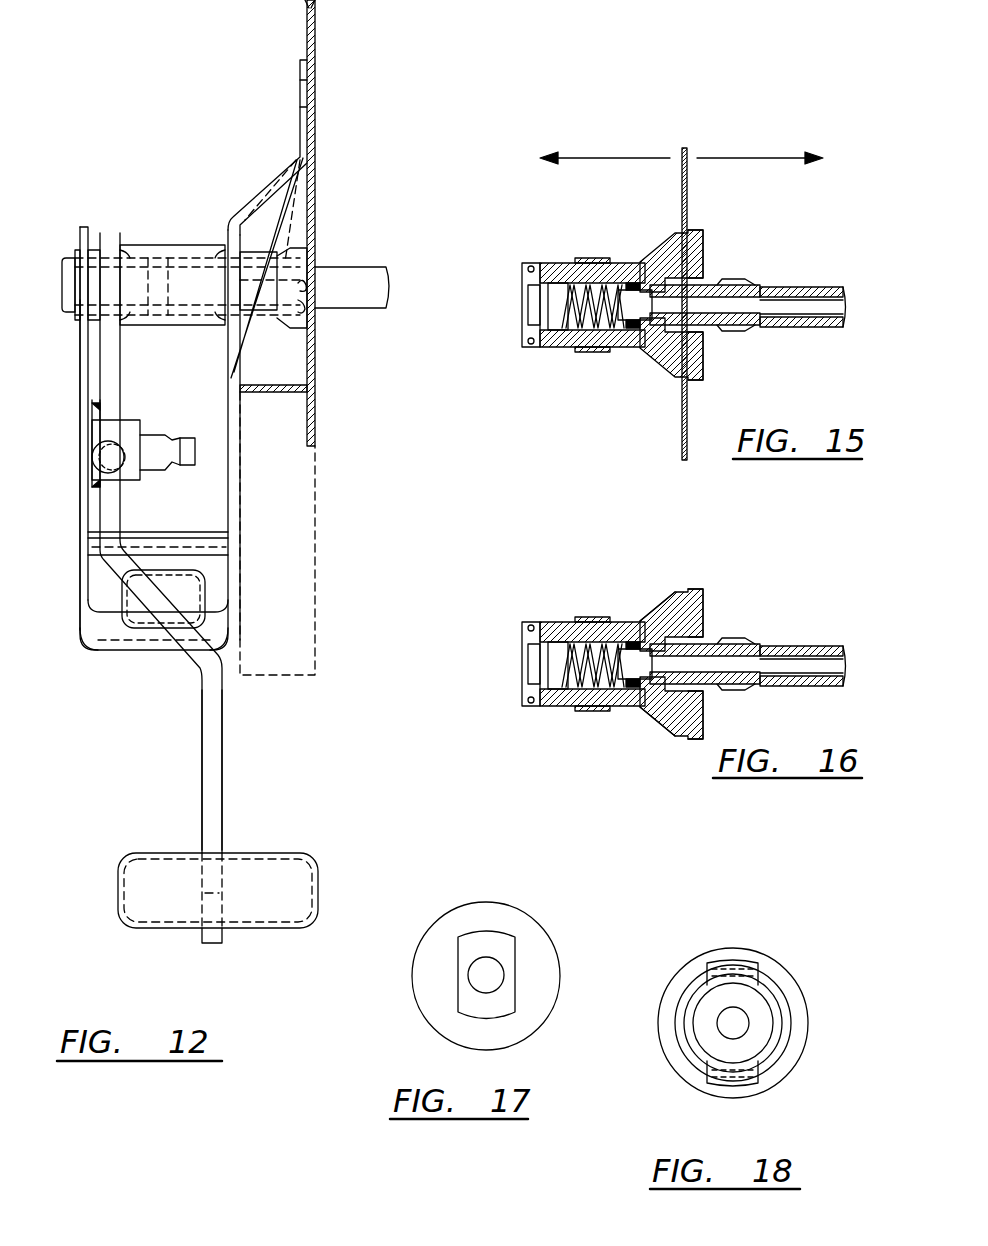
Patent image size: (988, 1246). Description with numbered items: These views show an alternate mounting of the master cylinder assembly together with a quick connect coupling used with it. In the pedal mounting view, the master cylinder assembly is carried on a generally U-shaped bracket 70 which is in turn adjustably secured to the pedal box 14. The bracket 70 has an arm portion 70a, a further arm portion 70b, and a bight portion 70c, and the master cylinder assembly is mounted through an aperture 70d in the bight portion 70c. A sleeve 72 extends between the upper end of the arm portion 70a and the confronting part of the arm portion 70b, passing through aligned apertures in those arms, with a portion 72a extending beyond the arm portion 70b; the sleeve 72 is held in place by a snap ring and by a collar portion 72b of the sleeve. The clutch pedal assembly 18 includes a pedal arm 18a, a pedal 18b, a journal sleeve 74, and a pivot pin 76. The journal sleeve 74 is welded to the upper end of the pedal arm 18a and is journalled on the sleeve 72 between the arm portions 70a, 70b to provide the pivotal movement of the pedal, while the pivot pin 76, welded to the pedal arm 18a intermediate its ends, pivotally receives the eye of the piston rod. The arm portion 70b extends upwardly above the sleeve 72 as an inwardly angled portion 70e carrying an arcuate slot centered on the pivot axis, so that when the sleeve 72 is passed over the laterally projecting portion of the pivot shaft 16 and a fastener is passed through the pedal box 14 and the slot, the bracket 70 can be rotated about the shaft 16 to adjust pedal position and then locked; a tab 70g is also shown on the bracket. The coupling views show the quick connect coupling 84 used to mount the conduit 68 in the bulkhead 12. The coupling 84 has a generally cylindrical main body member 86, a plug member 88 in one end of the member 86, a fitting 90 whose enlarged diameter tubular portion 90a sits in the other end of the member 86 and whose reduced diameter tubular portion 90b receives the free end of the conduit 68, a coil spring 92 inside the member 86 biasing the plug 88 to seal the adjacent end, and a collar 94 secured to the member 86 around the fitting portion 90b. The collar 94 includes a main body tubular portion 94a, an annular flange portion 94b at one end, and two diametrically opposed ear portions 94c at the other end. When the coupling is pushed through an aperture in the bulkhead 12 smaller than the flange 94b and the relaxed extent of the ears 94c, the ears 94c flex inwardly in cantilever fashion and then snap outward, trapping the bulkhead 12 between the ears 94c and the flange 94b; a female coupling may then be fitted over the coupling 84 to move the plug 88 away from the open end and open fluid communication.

In FIG. 15, the fire wall 12 is at (685, 150).
In FIG. 12, the pedal box 14 is at (314, 30).
In FIG. 12, the pivot shaft 16 is at (352, 272).
In FIG. 12, the clutch pedal assembly 18 is at (185, 722).
In FIG. 12, the pedal arm 18a is at (200, 768).
In FIG. 12, the pedal 18b is at (118, 885).
In FIG. 15, the conduit 68 is at (808, 286).
In FIG. 16, the conduit 68 is at (805, 635).
In FIG. 12, the bracket 70 is at (66, 415).
In FIG. 12, the arm portion 70a is at (80, 536).
In FIG. 12, the further arm portion 70b is at (241, 504).
In FIG. 12, the bight portion 70c is at (118, 652).
In FIG. 12, the aperture 70d is at (181, 582).
In FIG. 12, the inwardly angled portion 70e is at (276, 182).
In FIG. 12, the bracket tab 70g is at (112, 492).
In FIG. 12, the sleeve 72 is at (66, 258).
In FIG. 12, the sleeve portion 72a is at (303, 248).
In FIG. 12, the collar portion 72b is at (244, 336).
In FIG. 12, the journal sleeve 74 is at (200, 245).
In FIG. 12, the pivot pin 76 is at (160, 425).
In FIG. 15, the quick connect coupling 84 is at (632, 311).
In FIG. 16, the quick connect coupling 84 is at (609, 644).
In FIG. 15, the main body member 86 is at (548, 262).
In FIG. 16, the main body member 86 is at (585, 638).
In FIG. 15, the plug member 88 is at (520, 318).
In FIG. 16, the plug member 88 is at (499, 664).
In FIG. 15, the fitting 90 is at (723, 316).
In FIG. 16, the fitting 90 is at (705, 664).
In FIG. 15, the enlarged diameter tubular portion 90a is at (625, 283).
In FIG. 16, the enlarged diameter tubular portion 90a is at (635, 664).
In FIG. 15, the reduced diameter tubular portion 90b is at (722, 285).
In FIG. 15, the coil spring 92 is at (598, 285).
In FIG. 16, the coil spring 92 is at (586, 690).
In FIG. 15, the collar 94 is at (656, 254).
In FIG. 16, the collar 94 is at (717, 639).
In FIG. 17, the collar 94 is at (493, 897).
In FIG. 18, the collar 94 is at (690, 952).
In FIG. 16, the main body tubular portion 94a is at (663, 638).
In FIG. 15, the annular flange portion 94b is at (705, 250).
In FIG. 16, the annular flange portion 94b is at (741, 662).
In FIG. 17, the annular flange portion 94b is at (528, 932).
In FIG. 18, the ear portions 94c is at (746, 961).